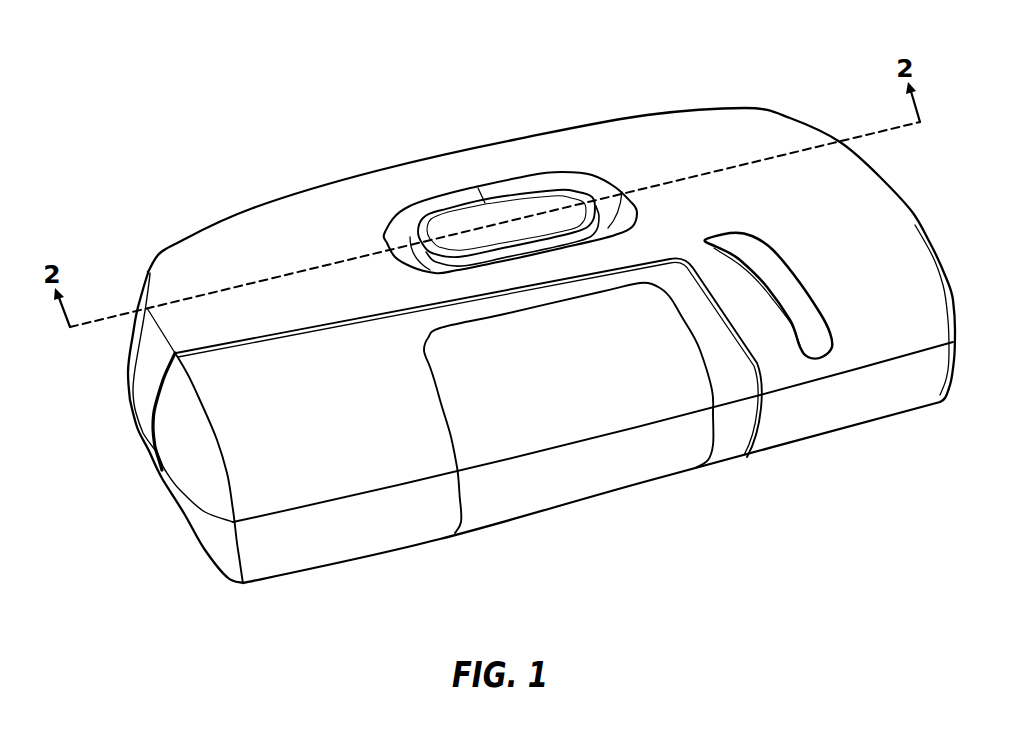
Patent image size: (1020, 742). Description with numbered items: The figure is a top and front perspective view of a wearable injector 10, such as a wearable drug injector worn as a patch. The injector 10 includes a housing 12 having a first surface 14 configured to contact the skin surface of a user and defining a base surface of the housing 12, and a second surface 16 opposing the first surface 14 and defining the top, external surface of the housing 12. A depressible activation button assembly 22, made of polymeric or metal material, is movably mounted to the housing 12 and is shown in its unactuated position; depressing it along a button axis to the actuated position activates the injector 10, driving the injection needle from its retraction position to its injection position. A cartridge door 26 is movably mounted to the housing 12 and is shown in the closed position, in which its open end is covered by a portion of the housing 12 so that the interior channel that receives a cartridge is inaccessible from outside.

The injector 10 is at (541, 331).
The housing 12 is at (541, 329).
The first surface 14 is at (813, 440).
The second surface 16 is at (257, 223).
The depressible activation button assembly 22 is at (467, 220).
The cartridge door 26 is at (363, 463).